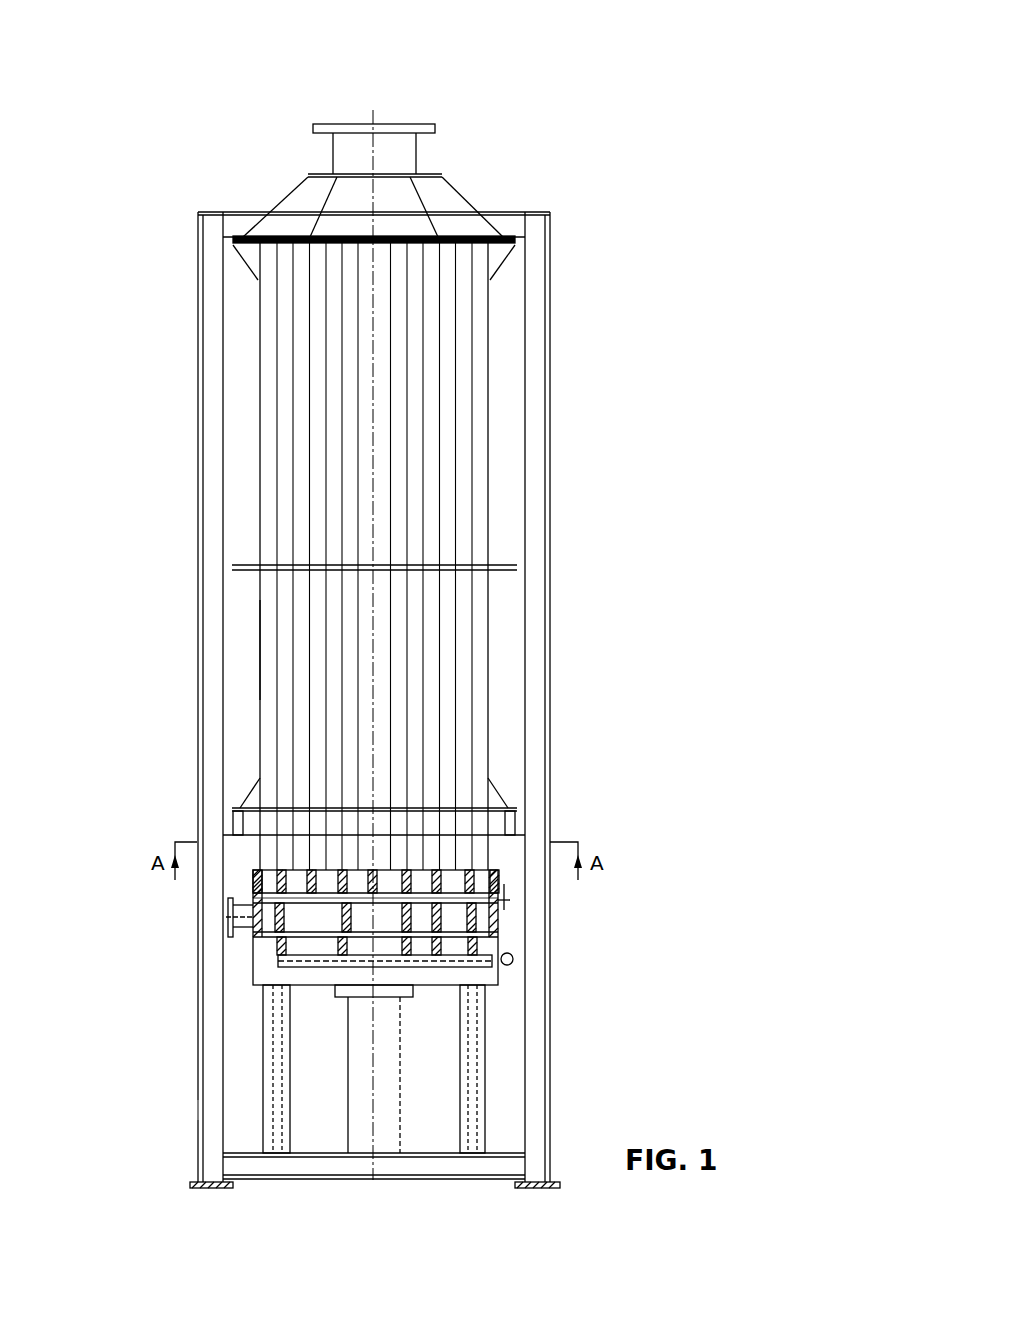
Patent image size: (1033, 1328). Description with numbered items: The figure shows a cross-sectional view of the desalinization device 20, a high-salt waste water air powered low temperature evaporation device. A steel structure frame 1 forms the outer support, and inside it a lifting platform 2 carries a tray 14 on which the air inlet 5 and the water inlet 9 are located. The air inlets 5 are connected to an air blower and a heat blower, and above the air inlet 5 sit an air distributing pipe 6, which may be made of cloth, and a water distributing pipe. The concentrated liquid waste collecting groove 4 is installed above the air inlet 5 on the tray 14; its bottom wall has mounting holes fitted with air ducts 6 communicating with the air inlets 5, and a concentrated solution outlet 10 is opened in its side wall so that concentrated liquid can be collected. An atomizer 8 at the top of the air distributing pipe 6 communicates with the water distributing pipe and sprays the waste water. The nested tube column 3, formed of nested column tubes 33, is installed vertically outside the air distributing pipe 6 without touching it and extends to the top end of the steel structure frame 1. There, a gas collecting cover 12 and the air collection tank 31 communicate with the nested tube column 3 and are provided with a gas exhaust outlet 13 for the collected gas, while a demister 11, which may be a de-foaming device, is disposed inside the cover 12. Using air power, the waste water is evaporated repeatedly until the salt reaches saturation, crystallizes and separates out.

The steel structure frame 1 is at (134, 1136).
The lifting platform 2 is at (333, 698).
The nested tube column 3 is at (290, 556).
The concentrated liquid waste collecting groove 4 is at (162, 830).
The air inlet 5 is at (158, 936).
The air distributing pipe 6 is at (430, 770).
The atomizer 8 is at (536, 732).
The water inlet 9 is at (554, 995).
The concentrated solution outlet 10 is at (554, 914).
The demister 11 is at (418, 200).
The gas collecting cover 12 is at (285, 184).
The gas exhaust outlet 13 is at (463, 72).
The tray 14 is at (255, 968).
The desalinization device 20 is at (190, 479).
The air collection tank 31 is at (319, 183).
The nested column tubes 33 is at (262, 676).